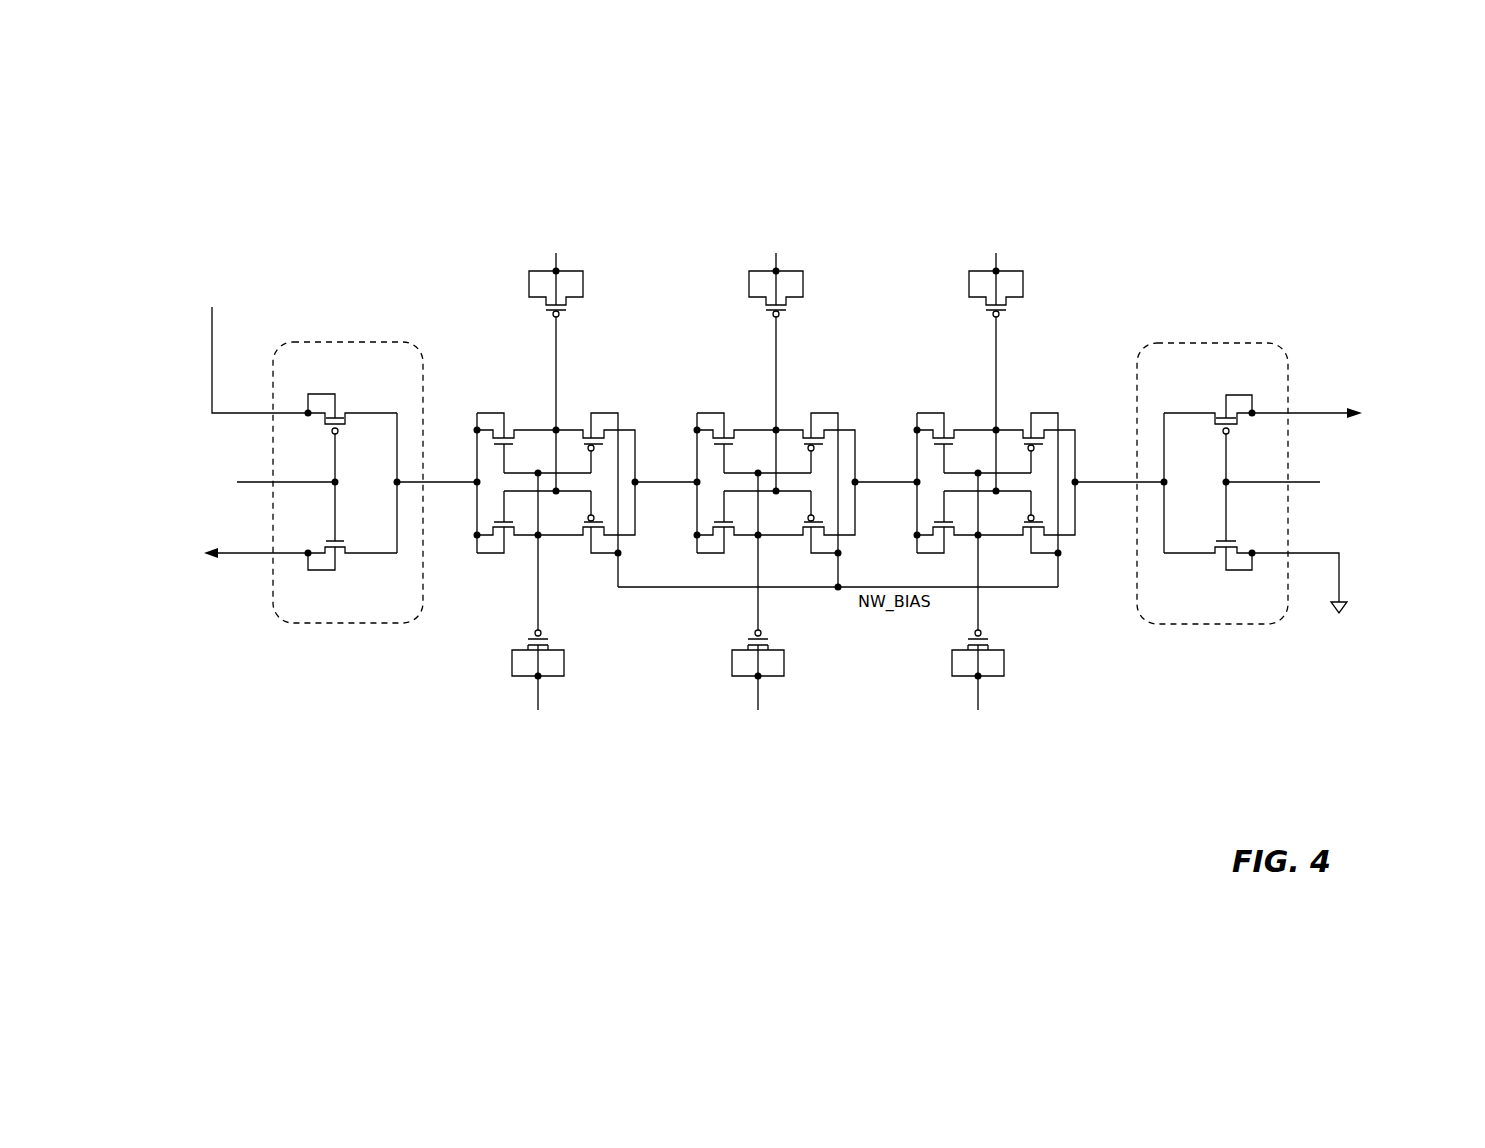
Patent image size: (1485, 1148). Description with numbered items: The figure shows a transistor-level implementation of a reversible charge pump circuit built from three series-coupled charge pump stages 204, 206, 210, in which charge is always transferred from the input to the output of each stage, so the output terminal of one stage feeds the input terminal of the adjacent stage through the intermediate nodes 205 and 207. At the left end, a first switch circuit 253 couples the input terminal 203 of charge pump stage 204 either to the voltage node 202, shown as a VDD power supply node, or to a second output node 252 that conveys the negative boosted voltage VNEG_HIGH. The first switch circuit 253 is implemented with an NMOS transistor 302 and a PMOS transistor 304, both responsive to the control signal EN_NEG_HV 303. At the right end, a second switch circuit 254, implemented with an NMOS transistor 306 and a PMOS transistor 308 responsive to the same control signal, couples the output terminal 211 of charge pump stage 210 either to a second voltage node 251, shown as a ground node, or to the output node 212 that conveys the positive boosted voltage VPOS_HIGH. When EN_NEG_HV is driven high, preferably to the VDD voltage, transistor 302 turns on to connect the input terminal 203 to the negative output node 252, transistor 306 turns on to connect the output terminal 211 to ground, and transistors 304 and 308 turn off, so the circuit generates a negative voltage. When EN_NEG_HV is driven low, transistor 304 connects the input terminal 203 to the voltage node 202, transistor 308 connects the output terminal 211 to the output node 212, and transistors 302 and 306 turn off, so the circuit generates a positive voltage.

The voltage node 202 is at (212, 355).
The input terminal 203 is at (449, 478).
The charge pump stage 204 is at (556, 444).
The node between first and second stages 205 is at (660, 478).
The charge pump stage 206 is at (776, 444).
The node between second and third stages 207 is at (881, 478).
The charge pump stage 210 is at (996, 444).
The output terminal 211 is at (1101, 478).
The output node 212 is at (1319, 409).
The second voltage node 251 is at (1340, 569).
The second output node 252 is at (244, 548).
The first switch circuit 253 is at (343, 625).
The second switch circuit 254 is at (1213, 625).
The NMOS transistor 302 is at (342, 556).
The control signal EN_NEG_HV 303 is at (1259, 478).
The PMOS transistor 304 is at (342, 408).
The NMOS transistor 306 is at (1215, 559).
The PMOS transistor 308 is at (1218, 408).